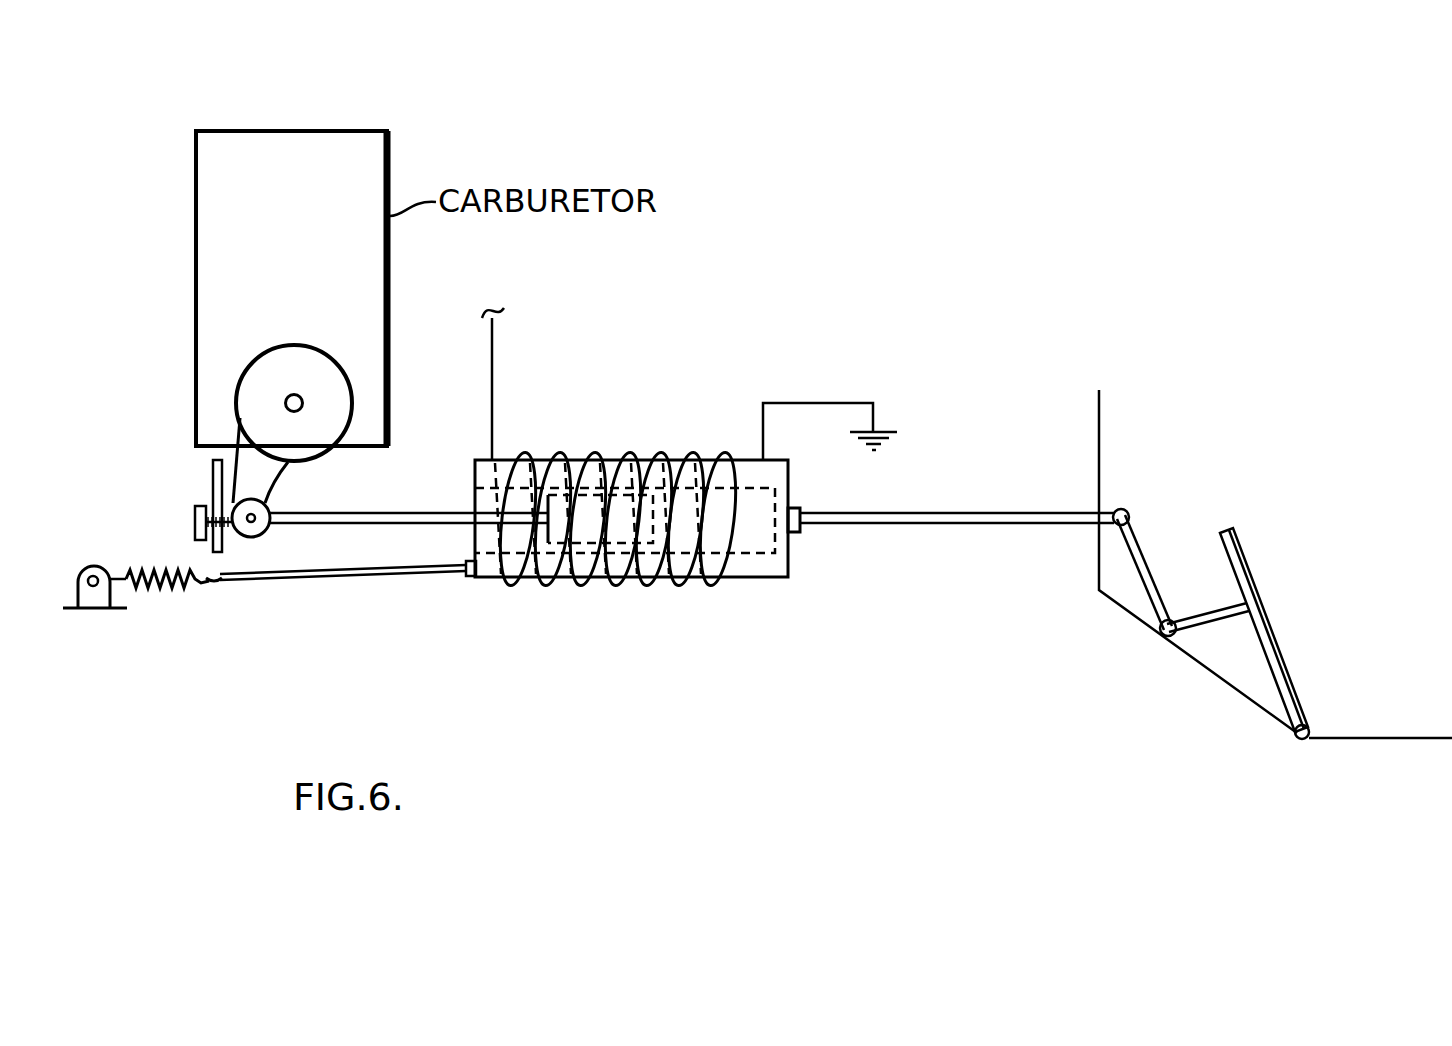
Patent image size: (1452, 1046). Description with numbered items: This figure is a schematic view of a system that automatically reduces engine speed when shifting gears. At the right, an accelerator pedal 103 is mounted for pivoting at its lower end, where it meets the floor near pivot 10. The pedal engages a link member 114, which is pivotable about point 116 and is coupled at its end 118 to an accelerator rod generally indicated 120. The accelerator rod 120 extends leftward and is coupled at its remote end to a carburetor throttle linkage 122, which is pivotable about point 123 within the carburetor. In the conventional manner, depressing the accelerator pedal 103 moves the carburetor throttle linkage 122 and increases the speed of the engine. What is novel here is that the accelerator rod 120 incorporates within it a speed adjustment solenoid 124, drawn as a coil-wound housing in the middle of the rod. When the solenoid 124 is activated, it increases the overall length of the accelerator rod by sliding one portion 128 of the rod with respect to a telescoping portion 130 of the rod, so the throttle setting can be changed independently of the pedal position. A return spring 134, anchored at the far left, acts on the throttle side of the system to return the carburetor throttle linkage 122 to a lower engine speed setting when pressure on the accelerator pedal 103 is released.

The pedal pivot 10 is at (1296, 740).
The accelerator pedal 103 is at (1240, 566).
The link member 114 is at (1155, 572).
The pivot of link member 116 is at (1159, 633).
The end of link member 118 is at (1130, 511).
The accelerator rod 120 is at (877, 533).
The carburetor throttle linkage 122 is at (278, 360).
The pivot of carburetor throttle linkage 123 is at (300, 397).
The speed adjustment solenoid 124 is at (578, 565).
The one portion of the rod 128 is at (951, 518).
The telescoping portion of the rod 130 is at (383, 518).
The return spring 134 is at (157, 588).